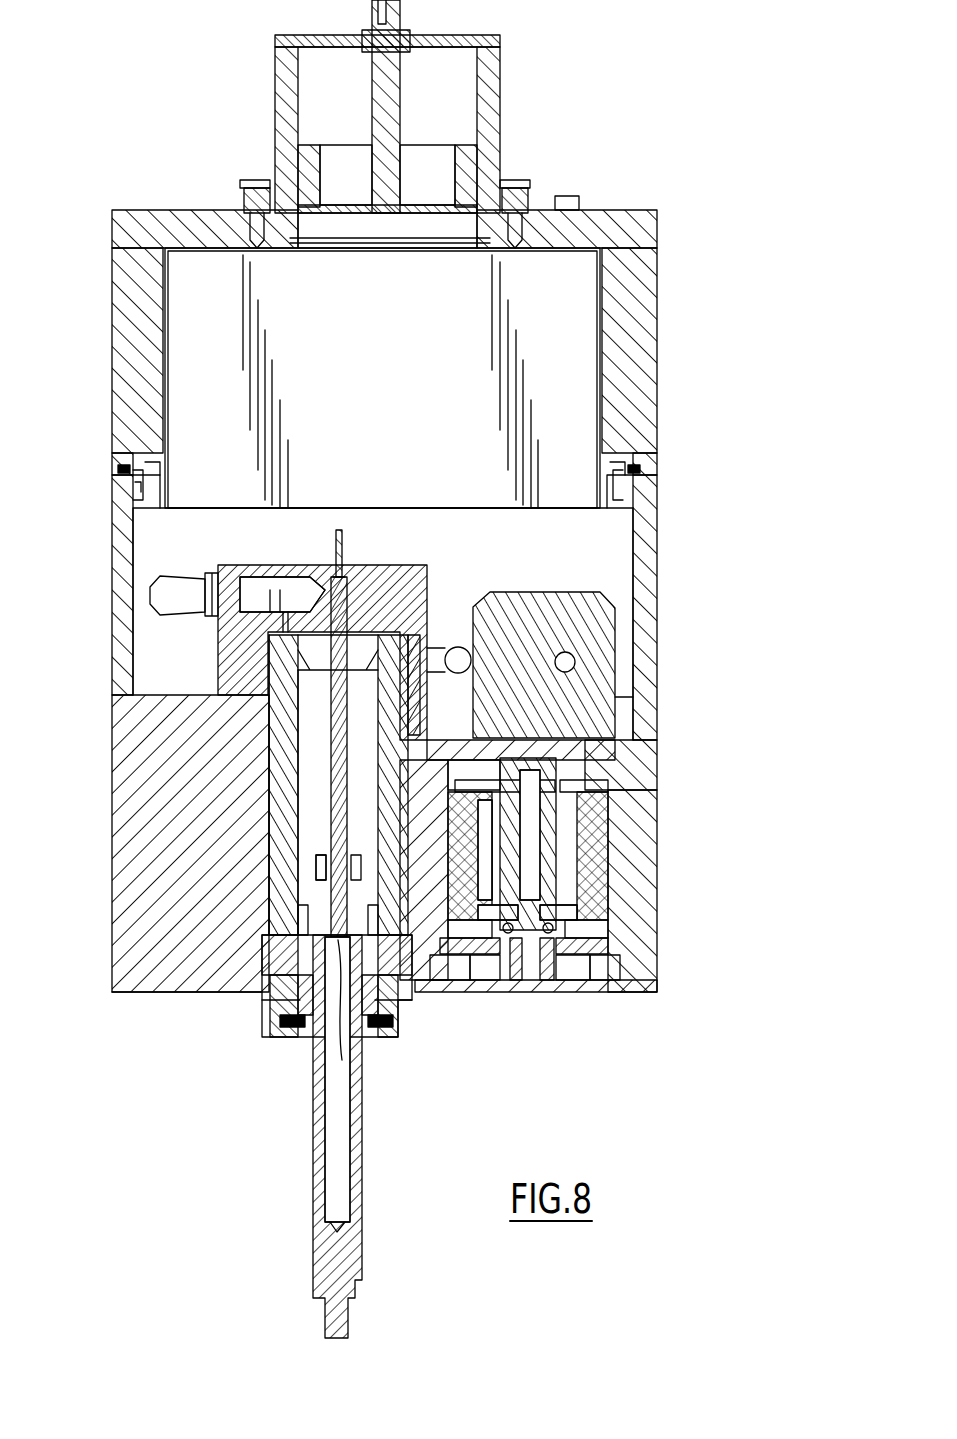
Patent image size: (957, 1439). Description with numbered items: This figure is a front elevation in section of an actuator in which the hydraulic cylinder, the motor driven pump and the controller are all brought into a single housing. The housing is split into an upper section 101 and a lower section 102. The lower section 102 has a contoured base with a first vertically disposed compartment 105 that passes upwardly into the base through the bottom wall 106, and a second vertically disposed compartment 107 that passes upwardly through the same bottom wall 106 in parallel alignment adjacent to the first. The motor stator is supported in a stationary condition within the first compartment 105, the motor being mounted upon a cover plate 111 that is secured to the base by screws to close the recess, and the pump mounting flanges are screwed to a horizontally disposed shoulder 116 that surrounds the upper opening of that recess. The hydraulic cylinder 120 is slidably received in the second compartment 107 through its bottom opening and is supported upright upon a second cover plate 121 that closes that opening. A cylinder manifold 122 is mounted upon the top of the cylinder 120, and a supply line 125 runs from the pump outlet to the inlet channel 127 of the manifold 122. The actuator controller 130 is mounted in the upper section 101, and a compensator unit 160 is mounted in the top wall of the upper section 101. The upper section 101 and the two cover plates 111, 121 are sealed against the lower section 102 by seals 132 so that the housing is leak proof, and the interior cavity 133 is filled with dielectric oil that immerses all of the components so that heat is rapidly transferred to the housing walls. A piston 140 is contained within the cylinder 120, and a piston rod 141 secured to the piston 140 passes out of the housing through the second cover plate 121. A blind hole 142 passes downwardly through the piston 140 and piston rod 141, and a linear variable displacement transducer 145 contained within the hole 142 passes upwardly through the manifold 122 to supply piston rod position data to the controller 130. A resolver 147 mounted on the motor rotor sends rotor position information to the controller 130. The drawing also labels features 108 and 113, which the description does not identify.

The compensator unit 160 is at (505, 113).
The actuator controller 130 is at (602, 292).
The upper section 101 is at (662, 345).
The seals 132 is at (118, 468).
The interior cavity 133 is at (160, 545).
The inlet channel 127 is at (290, 590).
The supply line 125 is at (165, 590).
The cylinder manifold 122 is at (430, 582).
The shoulder 116 is at (620, 735).
The lower section 102 is at (672, 805).
The linear variable displacement transducer 145 is at (330, 755).
The second compartment 107 is at (268, 795).
The hydraulic cylinder 120 is at (268, 842).
The body 108 is at (145, 935).
The coil 113 is at (608, 860).
The bottom wall 106 is at (160, 993).
The second cover plate 121 is at (248, 1012).
The resolver 147 is at (482, 993).
The piston 140 is at (325, 1066).
The cover plate 111 is at (548, 995).
The first compartment 105 is at (595, 968).
The blind hole 142 is at (340, 1098).
The piston rod 141 is at (313, 1275).